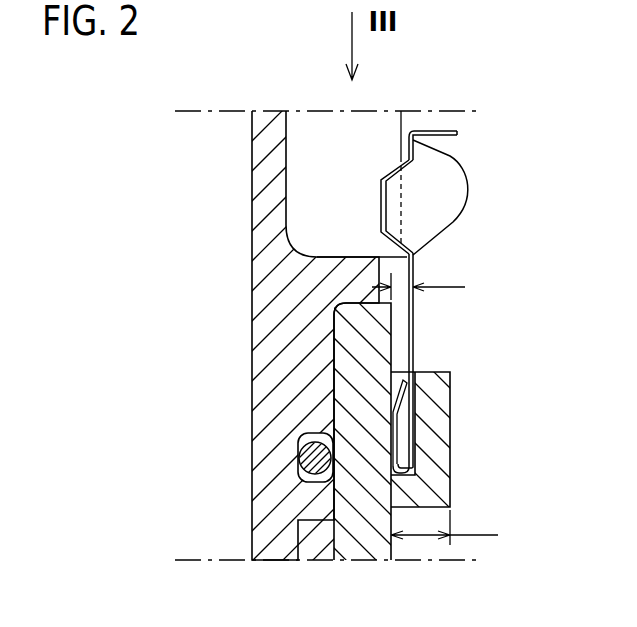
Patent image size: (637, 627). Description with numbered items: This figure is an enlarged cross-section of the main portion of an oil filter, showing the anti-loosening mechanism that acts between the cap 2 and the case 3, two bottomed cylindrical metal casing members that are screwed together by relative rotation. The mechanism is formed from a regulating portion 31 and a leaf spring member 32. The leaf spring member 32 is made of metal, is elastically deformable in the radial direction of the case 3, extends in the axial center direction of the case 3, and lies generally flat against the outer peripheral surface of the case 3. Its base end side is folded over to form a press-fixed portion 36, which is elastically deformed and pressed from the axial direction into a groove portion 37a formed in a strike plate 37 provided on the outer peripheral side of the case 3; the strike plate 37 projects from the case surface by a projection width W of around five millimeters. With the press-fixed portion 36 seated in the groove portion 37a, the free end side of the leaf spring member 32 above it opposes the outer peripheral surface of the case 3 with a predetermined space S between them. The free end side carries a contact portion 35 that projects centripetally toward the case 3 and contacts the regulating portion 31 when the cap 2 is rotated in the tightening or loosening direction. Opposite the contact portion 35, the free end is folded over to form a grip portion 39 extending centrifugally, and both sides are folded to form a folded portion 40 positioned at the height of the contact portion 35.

The cap 2 is at (263, 263).
The case 3 is at (362, 545).
The regulating portion 31 is at (371, 125).
The leaf spring member 32 is at (413, 330).
The contact portion 35 is at (380, 213).
The press-fixed portion 36 is at (415, 449).
The strike plate 37 is at (440, 418).
The groove portion 37a is at (405, 414).
The grip portion 39 is at (458, 131).
The folded portion 40 is at (445, 176).
The space S is at (447, 287).
The projection width W is at (498, 535).